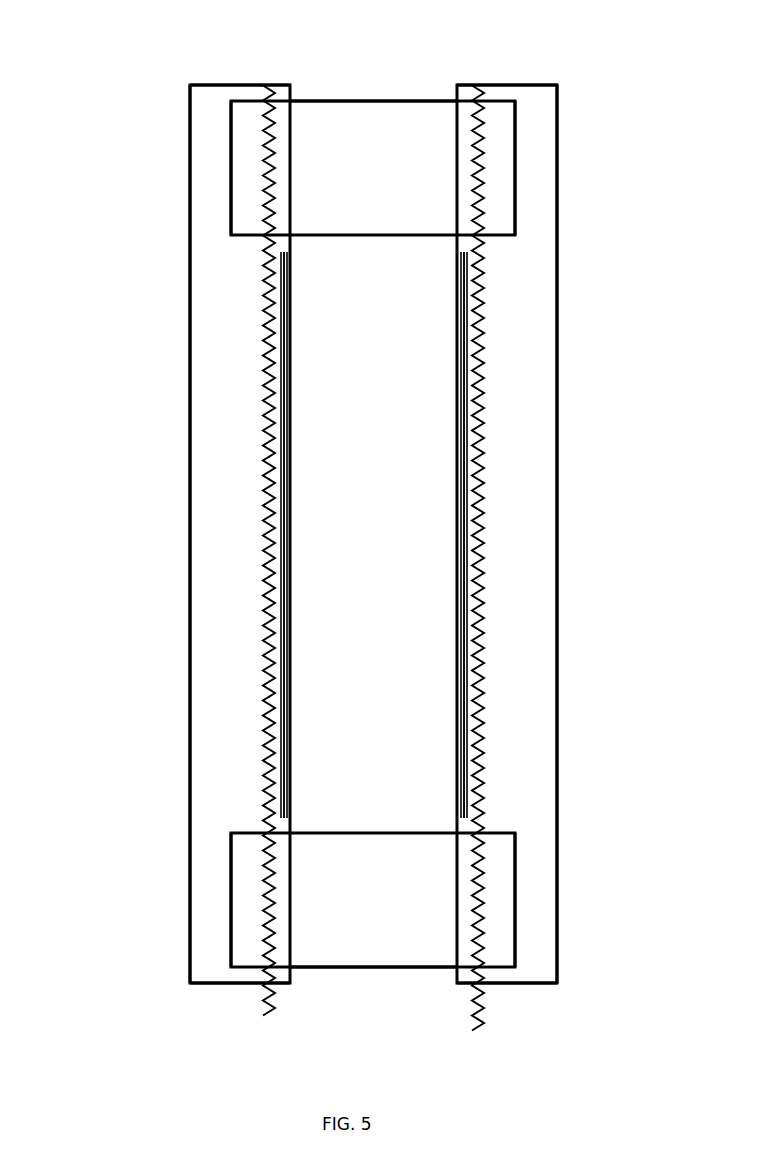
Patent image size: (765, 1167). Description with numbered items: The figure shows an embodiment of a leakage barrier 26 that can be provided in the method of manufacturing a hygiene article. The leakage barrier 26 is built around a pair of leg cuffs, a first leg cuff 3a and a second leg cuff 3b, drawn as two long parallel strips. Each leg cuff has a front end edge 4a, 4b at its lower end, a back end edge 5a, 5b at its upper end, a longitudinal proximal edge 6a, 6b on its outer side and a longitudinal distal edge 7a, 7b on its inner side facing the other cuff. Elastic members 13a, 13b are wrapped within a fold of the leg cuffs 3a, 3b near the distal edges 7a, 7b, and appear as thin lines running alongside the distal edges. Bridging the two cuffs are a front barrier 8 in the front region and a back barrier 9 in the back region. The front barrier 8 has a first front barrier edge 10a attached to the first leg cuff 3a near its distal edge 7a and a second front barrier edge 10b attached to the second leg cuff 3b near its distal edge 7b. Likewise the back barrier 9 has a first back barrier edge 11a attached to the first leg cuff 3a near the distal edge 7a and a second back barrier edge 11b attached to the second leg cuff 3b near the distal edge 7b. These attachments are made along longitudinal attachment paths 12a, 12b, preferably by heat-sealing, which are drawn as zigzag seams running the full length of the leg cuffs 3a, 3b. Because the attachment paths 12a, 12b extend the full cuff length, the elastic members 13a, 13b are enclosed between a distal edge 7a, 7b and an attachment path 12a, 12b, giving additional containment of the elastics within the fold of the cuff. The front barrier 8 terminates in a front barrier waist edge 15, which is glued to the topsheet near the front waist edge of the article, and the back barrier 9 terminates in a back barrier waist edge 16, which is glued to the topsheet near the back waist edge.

The leakage barrier 26 is at (162, 265).
The first leg cuff 3a is at (191, 547).
The second leg cuff 3b is at (542, 549).
The front end edge of first leg cuff 4a is at (209, 973).
The front end edge of second leg cuff 4b is at (503, 978).
The back end edge of first leg cuff 5a is at (213, 107).
The back end edge of second leg cuff 5b is at (519, 97).
The longitudinal proximal edge of first leg cuff 6a is at (207, 405).
The longitudinal proximal edge of second leg cuff 6b is at (537, 339).
The longitudinal distal edge of first leg cuff 7a is at (288, 460).
The longitudinal distal edge of second leg cuff 7b is at (458, 425).
The front barrier 8 is at (371, 939).
The back barrier 9 is at (374, 136).
The first front barrier edge 10a is at (247, 900).
The second front barrier edge 10b is at (500, 932).
The first back barrier edge 11a is at (245, 183).
The second back barrier edge 11b is at (499, 213).
The longitudinal attachment path 12a is at (267, 138).
The longitudinal attachment path 12b is at (482, 192).
The elastic member 13a is at (281, 321).
The elastic member 13b is at (459, 345).
The front barrier waist edge 15 is at (342, 952).
The back barrier waist edge 16 is at (378, 127).